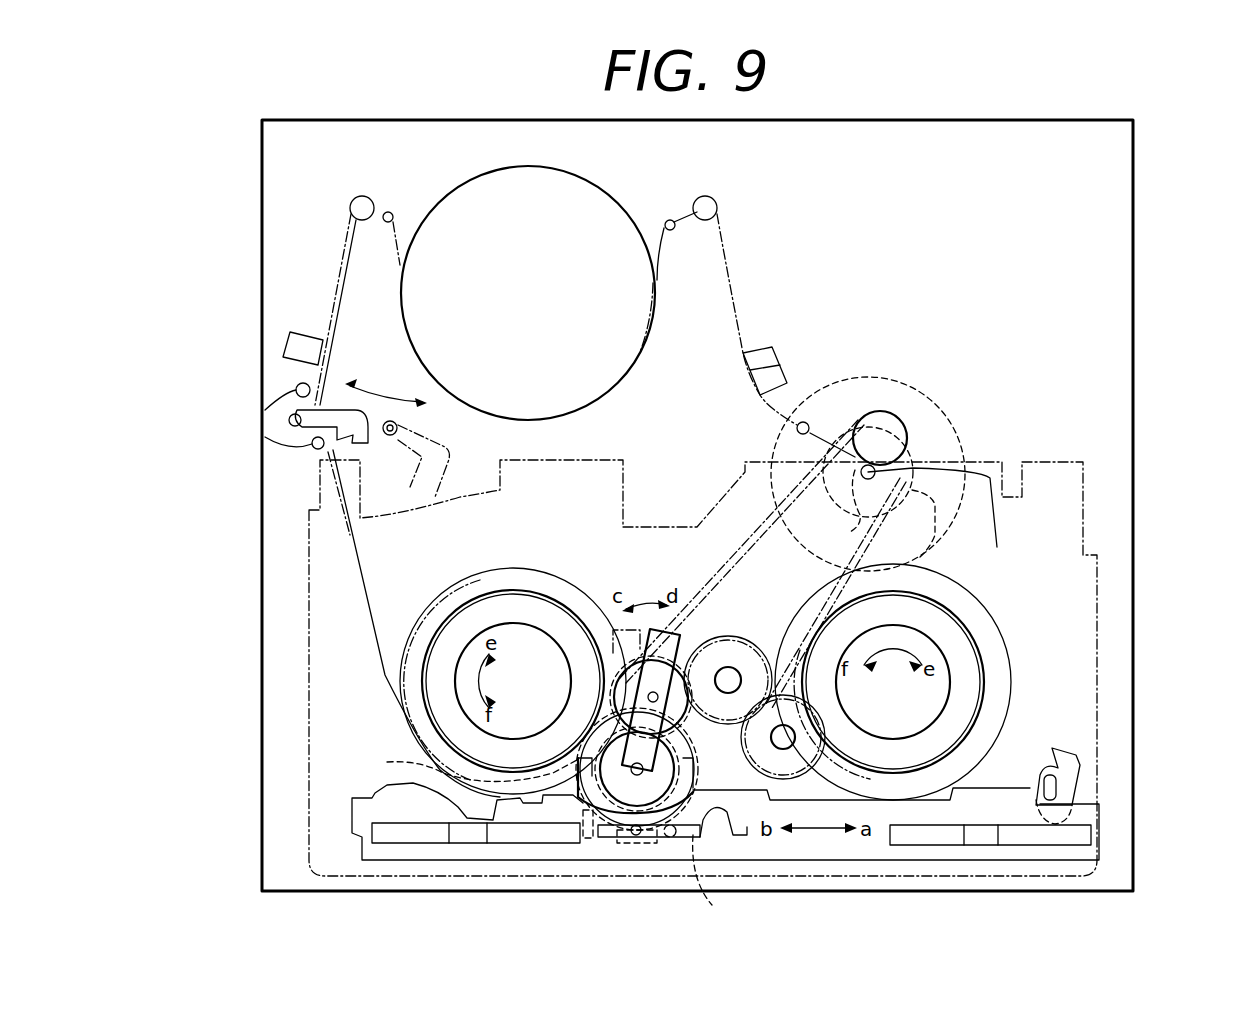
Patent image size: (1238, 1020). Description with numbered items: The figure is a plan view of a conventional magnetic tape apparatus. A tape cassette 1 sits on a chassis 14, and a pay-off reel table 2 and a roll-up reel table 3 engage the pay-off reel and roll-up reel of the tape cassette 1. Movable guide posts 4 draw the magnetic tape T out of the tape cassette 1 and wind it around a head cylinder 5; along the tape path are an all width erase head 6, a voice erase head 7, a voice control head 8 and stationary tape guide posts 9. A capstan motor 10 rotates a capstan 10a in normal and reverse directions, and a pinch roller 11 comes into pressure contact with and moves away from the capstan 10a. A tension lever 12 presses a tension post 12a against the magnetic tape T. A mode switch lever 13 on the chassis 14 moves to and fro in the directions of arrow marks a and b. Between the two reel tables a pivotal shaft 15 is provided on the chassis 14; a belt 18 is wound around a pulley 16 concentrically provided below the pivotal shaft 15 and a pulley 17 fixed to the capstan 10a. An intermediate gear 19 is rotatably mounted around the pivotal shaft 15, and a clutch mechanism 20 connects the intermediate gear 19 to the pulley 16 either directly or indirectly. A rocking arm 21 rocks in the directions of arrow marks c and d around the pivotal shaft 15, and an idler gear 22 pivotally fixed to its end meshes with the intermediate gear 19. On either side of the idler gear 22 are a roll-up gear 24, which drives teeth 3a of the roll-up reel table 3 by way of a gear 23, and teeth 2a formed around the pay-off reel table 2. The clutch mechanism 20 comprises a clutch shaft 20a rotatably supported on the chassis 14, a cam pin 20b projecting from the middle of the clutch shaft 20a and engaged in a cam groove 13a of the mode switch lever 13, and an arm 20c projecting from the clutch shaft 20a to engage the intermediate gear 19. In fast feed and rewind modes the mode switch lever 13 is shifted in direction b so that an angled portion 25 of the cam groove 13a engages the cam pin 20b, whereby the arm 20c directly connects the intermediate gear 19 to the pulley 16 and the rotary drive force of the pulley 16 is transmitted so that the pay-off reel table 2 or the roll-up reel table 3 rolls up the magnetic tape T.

The tape cassette 1 is at (585, 462).
The pay-off reel table 2 is at (512, 623).
The teeth 2a is at (562, 595).
The roll-up reel table 3 is at (945, 697).
The teeth 3a is at (950, 630).
The movable guide posts 4 is at (388, 212).
The head cylinder 5 is at (577, 188).
The all width erase head 6 is at (305, 333).
The voice erase head 7 is at (780, 350).
The voice control head 8 is at (786, 372).
The stationary tape guide posts 9 is at (289, 420).
The capstan motor 10 is at (910, 377).
The capstan 10a is at (858, 500).
The pinch roller 11 is at (907, 442).
The tension lever 12 is at (345, 465).
The tension post 12a is at (318, 397).
The mode switch lever 13 is at (1010, 800).
The cam groove 13a is at (670, 838).
The chassis 14 is at (1133, 350).
The pivotal shaft 15 is at (660, 770).
The pulley 16 is at (410, 762).
The pulley 17 is at (938, 500).
The belt 18 is at (752, 560).
The intermediate gear 19 is at (610, 727).
The clutch mechanism 20 is at (592, 852).
The clutch shaft 20a is at (728, 884).
The cam pin 20b is at (633, 836).
The arm 20c is at (578, 805).
The rocking arm 21 is at (682, 634).
The idler gear 22 is at (615, 672).
The gear 23 is at (815, 735).
The roll-up gear 24 is at (738, 638).
The angled portion 25 is at (712, 823).
The magnetic tape T is at (740, 240).